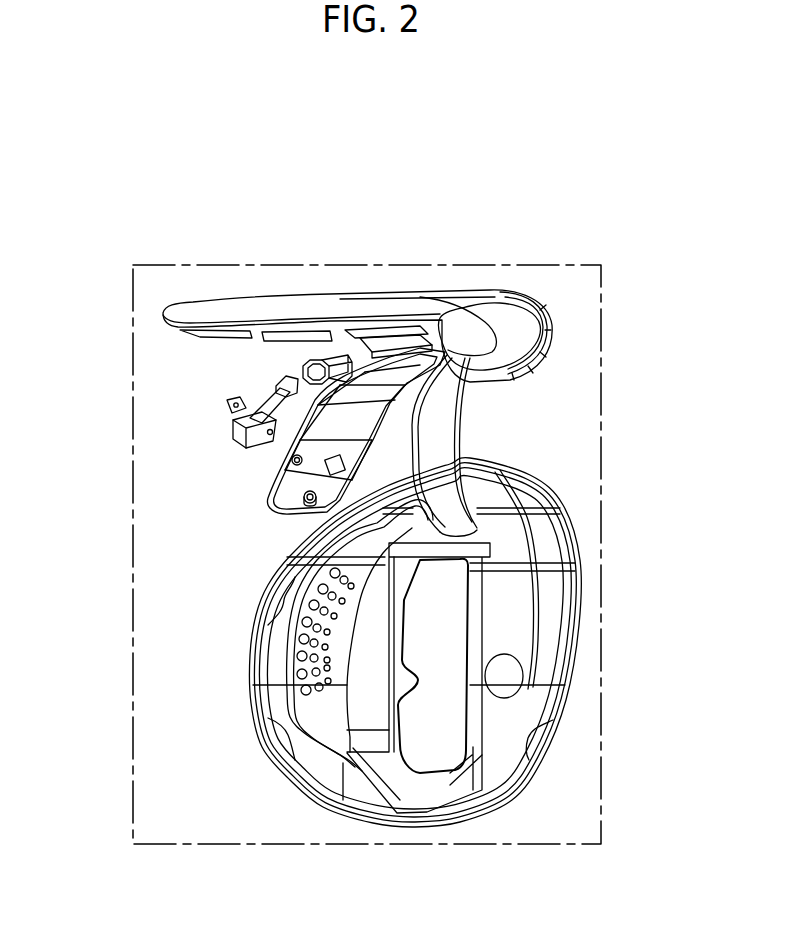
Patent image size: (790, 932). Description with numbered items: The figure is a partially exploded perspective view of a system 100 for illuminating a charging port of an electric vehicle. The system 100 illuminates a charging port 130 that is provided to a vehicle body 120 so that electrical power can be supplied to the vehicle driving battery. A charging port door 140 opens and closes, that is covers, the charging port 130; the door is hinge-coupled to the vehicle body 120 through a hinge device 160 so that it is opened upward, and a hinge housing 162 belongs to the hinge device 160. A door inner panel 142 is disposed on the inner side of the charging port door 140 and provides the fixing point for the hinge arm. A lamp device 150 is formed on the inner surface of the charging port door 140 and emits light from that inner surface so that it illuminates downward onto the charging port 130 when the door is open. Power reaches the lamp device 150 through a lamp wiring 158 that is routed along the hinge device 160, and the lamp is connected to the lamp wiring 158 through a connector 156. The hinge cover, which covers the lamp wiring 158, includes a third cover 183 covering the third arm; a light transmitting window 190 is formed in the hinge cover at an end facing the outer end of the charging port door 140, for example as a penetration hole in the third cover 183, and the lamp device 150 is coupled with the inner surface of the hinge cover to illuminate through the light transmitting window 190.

The system for illuminating a charging port of an electric vehicle 100 is at (455, 234).
The vehicle body 120 is at (568, 465).
The charging port 130 is at (430, 738).
The charging port door 140 is at (268, 313).
The door inner panel 142 is at (547, 347).
The lamp device 150 is at (255, 387).
The connector 156 is at (308, 364).
The lamp wiring 158 is at (381, 338).
The hinge device 160 is at (470, 420).
The hinge housing 162 is at (547, 643).
The third cover 183 is at (277, 448).
The light transmitting window 190 is at (278, 481).